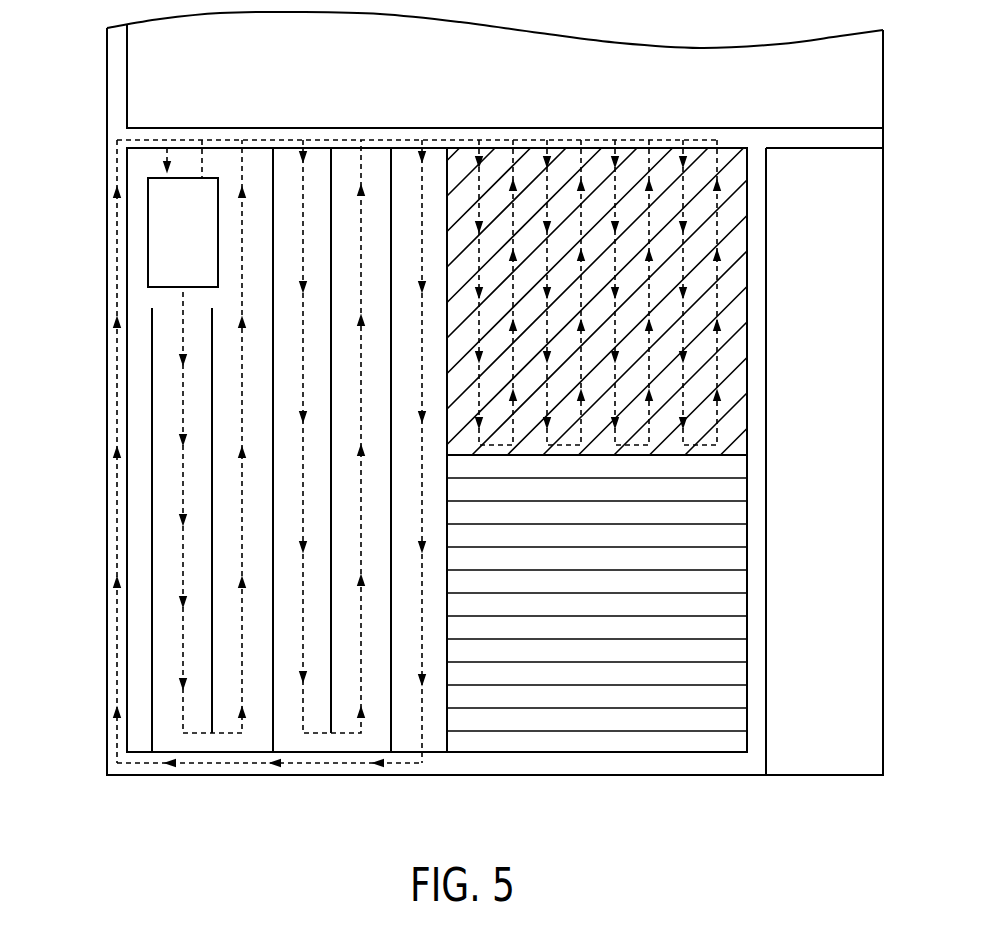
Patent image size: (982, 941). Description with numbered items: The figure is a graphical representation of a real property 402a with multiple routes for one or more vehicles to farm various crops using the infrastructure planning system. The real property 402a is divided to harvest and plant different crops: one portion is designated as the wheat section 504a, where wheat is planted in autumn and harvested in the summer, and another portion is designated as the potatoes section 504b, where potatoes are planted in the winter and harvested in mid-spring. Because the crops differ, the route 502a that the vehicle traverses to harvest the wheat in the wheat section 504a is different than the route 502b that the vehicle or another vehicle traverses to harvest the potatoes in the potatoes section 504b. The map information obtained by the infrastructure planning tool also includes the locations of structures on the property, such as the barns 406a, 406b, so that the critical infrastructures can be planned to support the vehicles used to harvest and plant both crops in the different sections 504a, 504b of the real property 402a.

The real property 402a is at (748, 451).
The barn 406a is at (148, 243).
The barn 406b is at (190, 178).
The route 502a is at (108, 498).
The route 502b is at (706, 138).
The wheat section 504a is at (140, 745).
The potatoes section 504b is at (748, 312).